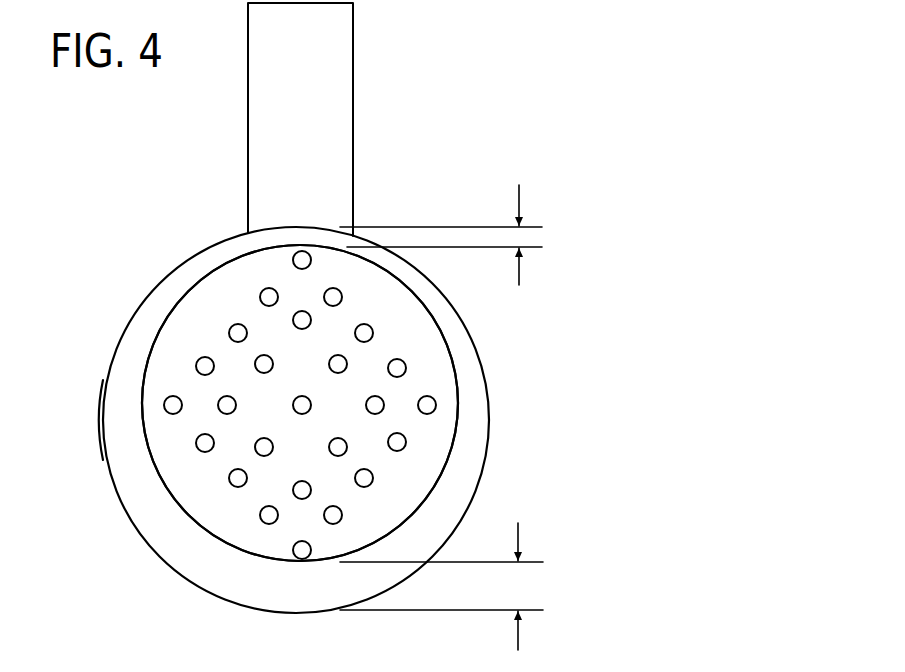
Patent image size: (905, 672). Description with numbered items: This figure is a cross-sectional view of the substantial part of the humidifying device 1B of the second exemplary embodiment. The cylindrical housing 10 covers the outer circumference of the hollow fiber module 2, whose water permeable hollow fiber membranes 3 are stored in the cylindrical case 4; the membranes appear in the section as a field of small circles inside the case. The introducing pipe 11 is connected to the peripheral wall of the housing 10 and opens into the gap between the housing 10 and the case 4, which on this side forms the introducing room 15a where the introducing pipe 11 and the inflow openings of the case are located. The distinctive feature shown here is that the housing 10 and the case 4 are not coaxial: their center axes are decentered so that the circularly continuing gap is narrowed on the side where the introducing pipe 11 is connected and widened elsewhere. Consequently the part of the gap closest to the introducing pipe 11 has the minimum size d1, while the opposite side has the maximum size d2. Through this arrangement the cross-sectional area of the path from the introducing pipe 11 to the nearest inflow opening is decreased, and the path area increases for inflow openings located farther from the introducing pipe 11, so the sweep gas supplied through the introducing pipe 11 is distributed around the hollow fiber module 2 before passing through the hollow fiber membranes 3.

The humidifying device 1B is at (146, 194).
The introducing pipe 11 is at (354, 118).
The cylindrical housing 10 is at (474, 337).
The introducing room 15a is at (118, 378).
The cylindrical case 4 is at (456, 367).
The hollow fiber module 2 is at (186, 518).
The hollow fiber membranes 3 is at (436, 410).
The minimum size d1 is at (459, 235).
The maximum size d2 is at (441, 586).